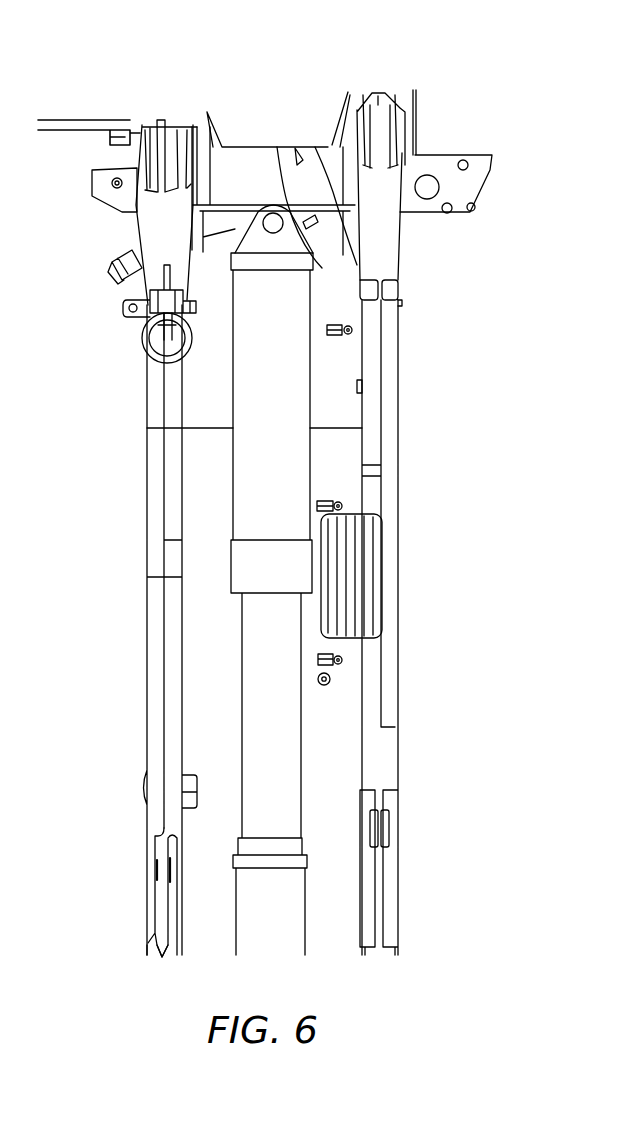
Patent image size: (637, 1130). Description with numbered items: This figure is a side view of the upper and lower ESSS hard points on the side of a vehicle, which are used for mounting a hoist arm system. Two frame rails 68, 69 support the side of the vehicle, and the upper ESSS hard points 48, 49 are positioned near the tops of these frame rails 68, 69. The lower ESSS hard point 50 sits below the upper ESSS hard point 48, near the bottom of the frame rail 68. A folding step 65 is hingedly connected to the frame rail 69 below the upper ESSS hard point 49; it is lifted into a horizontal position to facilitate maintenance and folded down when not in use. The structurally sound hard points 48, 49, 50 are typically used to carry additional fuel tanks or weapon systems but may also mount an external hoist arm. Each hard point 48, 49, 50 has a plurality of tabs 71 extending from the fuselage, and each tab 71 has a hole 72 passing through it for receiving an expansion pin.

The upper ESSS hard point 48 is at (140, 147).
The upper ESSS hard point 49 is at (403, 112).
The lower ESSS hard point 50 is at (156, 891).
The folding step 65 is at (376, 581).
The frame rail 68 is at (158, 390).
The frame rail 69 is at (390, 368).
The tab 71 is at (182, 140).
The hole 72 is at (137, 168).